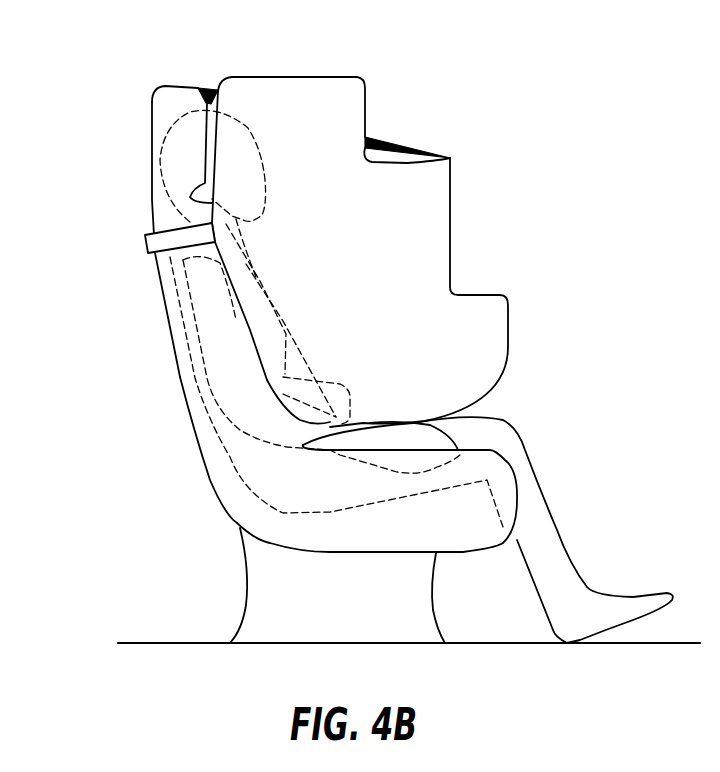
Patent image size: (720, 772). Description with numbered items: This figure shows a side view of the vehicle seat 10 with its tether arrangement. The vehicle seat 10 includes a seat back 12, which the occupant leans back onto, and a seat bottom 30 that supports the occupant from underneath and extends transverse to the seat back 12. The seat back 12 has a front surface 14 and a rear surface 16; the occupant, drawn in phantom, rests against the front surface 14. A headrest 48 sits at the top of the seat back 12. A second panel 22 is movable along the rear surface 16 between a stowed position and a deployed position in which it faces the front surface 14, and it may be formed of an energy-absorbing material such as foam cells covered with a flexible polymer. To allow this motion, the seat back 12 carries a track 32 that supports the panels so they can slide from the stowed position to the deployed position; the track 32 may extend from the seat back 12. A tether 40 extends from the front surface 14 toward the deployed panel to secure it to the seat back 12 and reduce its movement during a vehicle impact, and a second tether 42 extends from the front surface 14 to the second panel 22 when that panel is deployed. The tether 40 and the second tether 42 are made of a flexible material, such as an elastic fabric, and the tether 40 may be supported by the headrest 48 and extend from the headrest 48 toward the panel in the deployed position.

The vehicle seat 10 is at (33, 78).
The seat back 12 is at (153, 111).
The front surface 14 is at (210, 125).
The rear surface 16 is at (151, 179).
The second panel 22 is at (447, 213).
The seat bottom 30 is at (227, 493).
The track 32 is at (145, 242).
The tether 40 is at (403, 142).
The second tether 42 is at (208, 96).
The headrest 48 is at (173, 102).